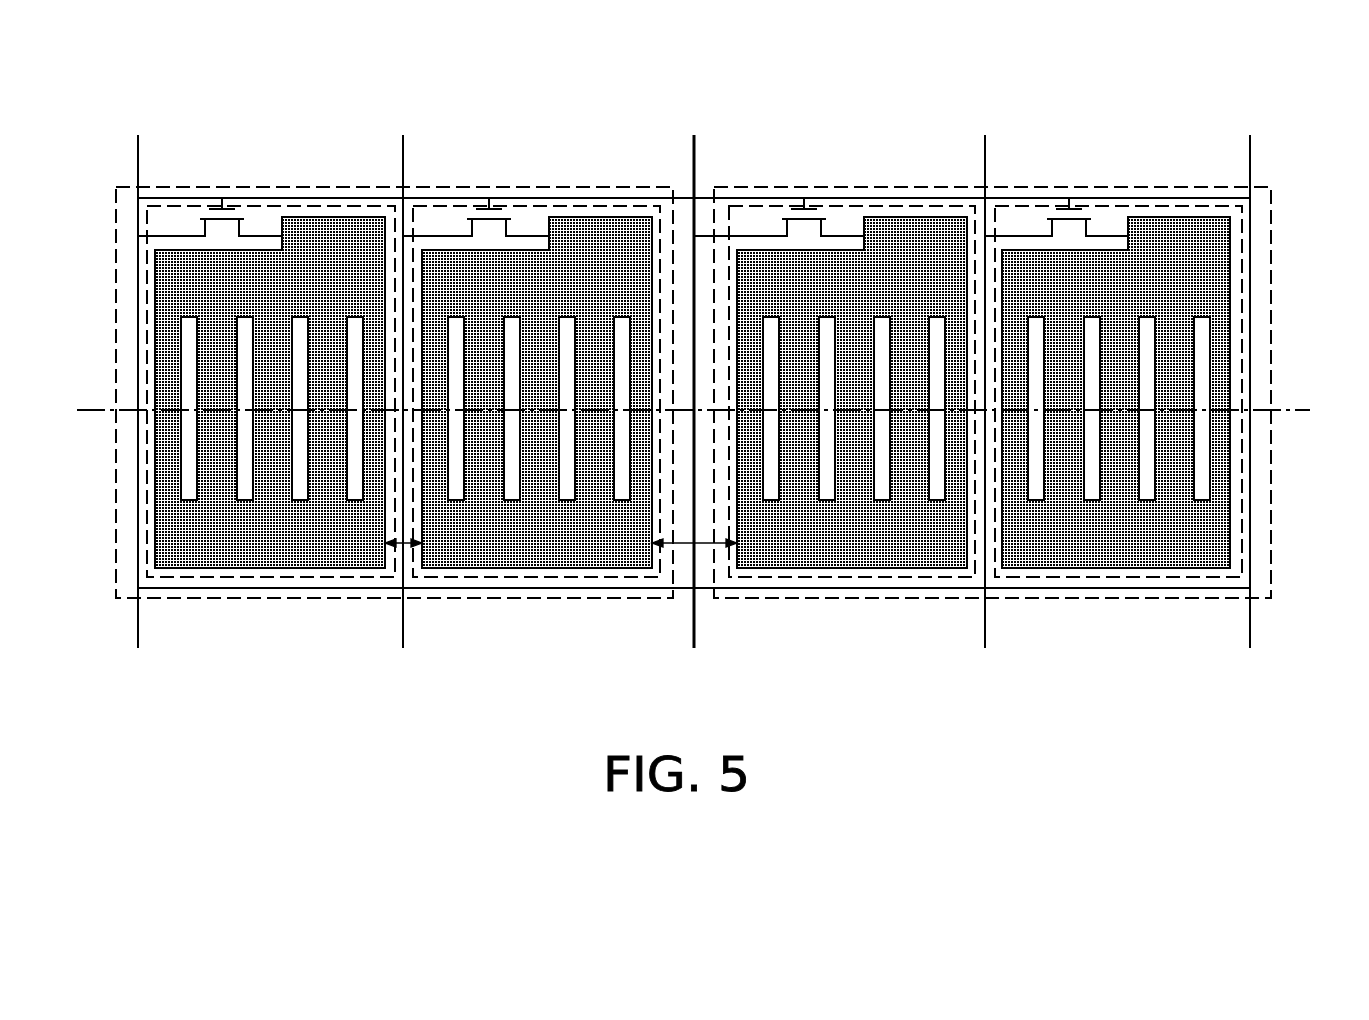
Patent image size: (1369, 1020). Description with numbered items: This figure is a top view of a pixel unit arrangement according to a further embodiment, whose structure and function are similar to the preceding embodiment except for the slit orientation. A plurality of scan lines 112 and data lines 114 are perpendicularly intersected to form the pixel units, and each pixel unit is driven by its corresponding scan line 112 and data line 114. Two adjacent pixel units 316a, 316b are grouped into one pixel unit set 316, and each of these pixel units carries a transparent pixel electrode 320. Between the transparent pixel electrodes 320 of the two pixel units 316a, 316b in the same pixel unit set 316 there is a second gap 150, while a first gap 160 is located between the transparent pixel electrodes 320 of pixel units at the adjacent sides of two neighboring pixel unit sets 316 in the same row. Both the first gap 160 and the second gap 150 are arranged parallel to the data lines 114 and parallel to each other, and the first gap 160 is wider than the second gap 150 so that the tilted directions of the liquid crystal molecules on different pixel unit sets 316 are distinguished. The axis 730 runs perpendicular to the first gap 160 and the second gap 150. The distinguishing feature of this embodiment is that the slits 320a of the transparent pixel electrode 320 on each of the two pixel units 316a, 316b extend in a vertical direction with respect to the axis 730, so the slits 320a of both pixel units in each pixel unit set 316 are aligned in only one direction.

The scan line 112 is at (283, 197).
The data line 114 is at (138, 172).
The second gap 150 is at (398, 545).
The first gap 160 is at (683, 545).
The pixel unit set 316 is at (193, 599).
The pixel unit 316a is at (270, 578).
The pixel unit 316b is at (533, 578).
The transparent pixel electrode 320 is at (335, 247).
The slits 320a is at (190, 333).
The axis 730 is at (720, 414).